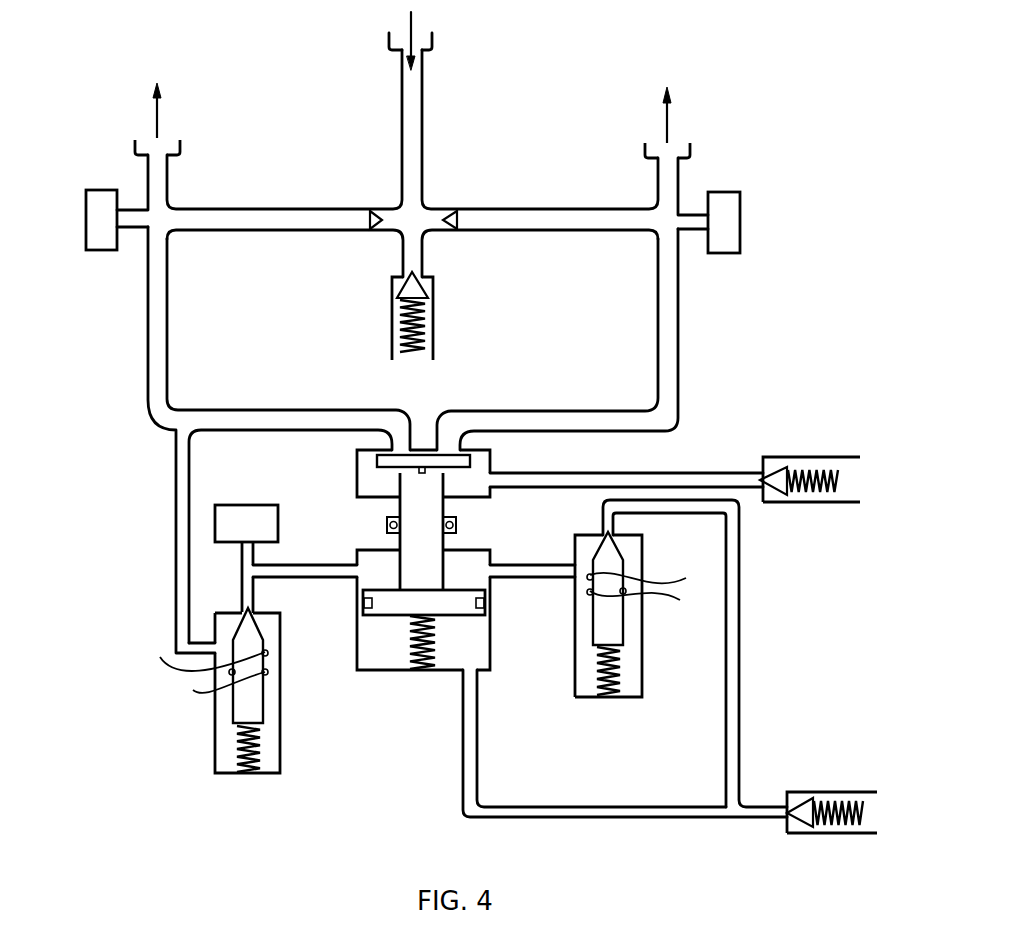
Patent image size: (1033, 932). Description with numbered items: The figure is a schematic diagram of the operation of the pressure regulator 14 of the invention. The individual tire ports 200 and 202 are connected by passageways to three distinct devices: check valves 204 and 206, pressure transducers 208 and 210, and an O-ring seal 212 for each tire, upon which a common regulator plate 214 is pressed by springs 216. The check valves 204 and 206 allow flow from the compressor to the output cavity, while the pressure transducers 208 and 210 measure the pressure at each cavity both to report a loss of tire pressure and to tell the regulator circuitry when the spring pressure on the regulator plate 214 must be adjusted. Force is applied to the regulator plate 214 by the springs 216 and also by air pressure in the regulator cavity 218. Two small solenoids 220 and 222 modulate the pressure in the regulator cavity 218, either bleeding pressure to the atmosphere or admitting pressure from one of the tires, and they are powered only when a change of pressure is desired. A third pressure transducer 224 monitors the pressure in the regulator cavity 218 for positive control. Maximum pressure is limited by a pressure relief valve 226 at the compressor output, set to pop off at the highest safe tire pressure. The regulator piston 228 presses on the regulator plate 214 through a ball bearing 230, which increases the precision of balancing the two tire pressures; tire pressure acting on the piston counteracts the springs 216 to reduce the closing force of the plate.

The tire inflation system 14 is at (788, 291).
The tire port 200 is at (167, 140).
The tire port 202 is at (677, 143).
The check valve 204 is at (376, 218).
The check valve 206 is at (456, 226).
The pressure transducer 208 is at (103, 252).
The pressure transducer 210 is at (740, 210).
The O-ring seal 212 is at (470, 460).
The regulator plate 214 is at (357, 477).
The springs 216 is at (410, 643).
The regulator cavity 218 is at (477, 548).
The solenoid 220 is at (233, 700).
The solenoid 222 is at (593, 627).
The pressure transducer 224 is at (215, 523).
The pressure relief valve 226 is at (392, 300).
The regulator piston 228 is at (400, 567).
The ball bearing 230 is at (388, 470).